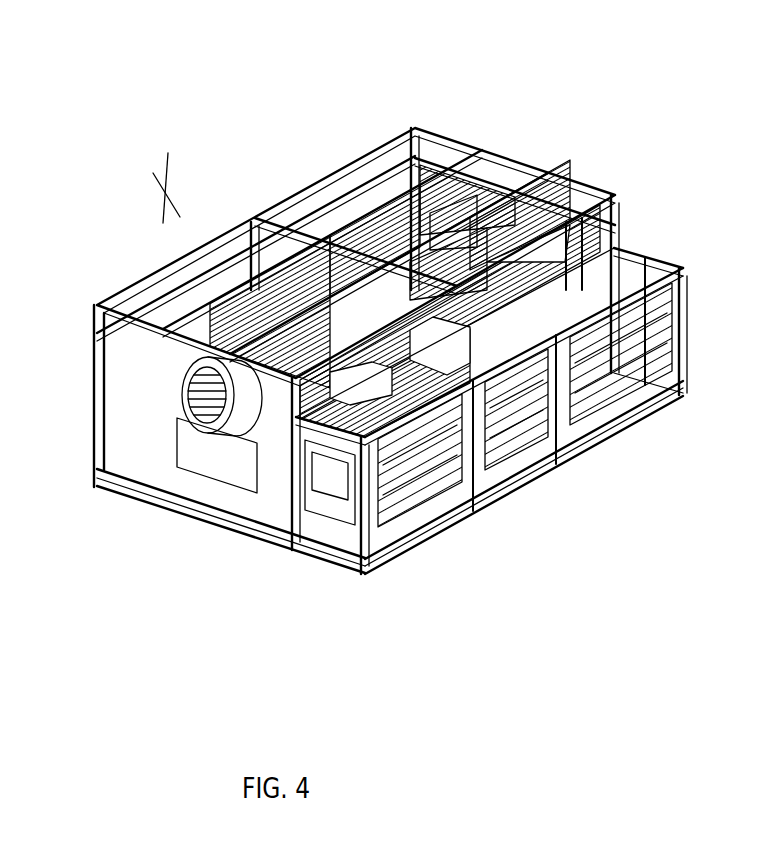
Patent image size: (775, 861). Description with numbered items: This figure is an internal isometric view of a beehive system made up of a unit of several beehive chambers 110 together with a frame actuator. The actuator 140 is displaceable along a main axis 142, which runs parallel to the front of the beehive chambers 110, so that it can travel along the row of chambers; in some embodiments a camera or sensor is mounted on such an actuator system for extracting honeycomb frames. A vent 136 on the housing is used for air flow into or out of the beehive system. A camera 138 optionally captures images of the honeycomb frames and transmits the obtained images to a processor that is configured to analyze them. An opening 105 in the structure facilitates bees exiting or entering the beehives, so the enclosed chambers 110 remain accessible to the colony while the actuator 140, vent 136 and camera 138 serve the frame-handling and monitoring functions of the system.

The opening 105 is at (520, 487).
The beehive chambers 110 is at (590, 388).
The vent 136 is at (190, 423).
The camera 138 is at (213, 457).
The actuator 140 is at (300, 258).
The main axis 142 is at (400, 205).